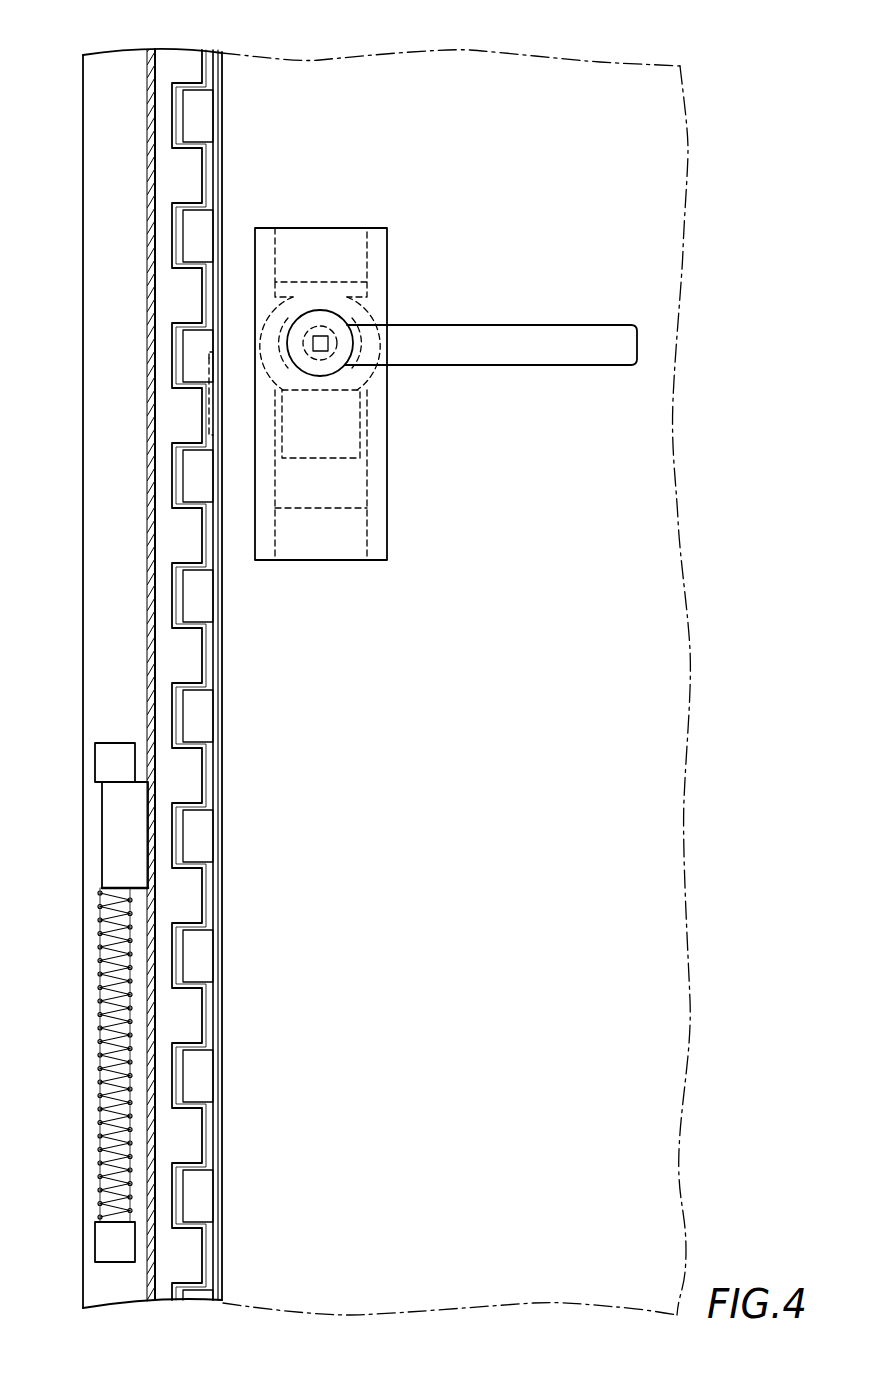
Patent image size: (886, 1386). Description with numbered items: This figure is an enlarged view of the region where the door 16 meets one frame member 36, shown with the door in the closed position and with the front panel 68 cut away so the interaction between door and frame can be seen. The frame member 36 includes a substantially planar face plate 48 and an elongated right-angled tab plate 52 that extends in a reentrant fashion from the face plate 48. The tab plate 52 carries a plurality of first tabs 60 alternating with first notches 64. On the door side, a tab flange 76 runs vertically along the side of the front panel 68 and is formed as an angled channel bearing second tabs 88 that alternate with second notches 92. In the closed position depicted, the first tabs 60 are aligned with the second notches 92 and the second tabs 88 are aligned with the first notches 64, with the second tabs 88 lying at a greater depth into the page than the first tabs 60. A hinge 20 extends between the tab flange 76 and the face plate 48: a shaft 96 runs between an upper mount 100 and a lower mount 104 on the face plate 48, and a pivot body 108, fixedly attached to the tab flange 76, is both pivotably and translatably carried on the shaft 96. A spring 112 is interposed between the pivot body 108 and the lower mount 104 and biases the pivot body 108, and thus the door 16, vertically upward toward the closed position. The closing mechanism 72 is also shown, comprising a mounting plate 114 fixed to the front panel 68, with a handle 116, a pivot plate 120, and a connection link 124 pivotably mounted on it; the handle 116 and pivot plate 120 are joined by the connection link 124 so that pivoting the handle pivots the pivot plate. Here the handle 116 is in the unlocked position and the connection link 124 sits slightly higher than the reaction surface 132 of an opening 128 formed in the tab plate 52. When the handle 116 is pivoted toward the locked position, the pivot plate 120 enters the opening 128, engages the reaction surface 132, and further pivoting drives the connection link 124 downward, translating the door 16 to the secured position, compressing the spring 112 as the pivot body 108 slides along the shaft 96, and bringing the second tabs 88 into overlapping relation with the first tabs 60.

The door 16 is at (128, 97).
The hinge 20 is at (80, 820).
The frame member 36 is at (70, 408).
The face plate 48 is at (117, 65).
The tab plate 52 is at (230, 66).
The first tab 60 is at (183, 115).
The first notch 64 is at (210, 183).
The front panel 68 is at (687, 118).
The closing mechanism 72 is at (340, 207).
The tab flange 76 is at (135, 238).
The second tab 88 is at (217, 163).
The second notch 92 is at (173, 223).
The shaft 96 is at (100, 1048).
The upper mount 100 is at (97, 755).
The lower mount 104 is at (95, 1240).
The pivot body 108 is at (100, 850).
The spring 112 is at (100, 948).
The mounting plate 114 is at (387, 273).
The handle 116 is at (523, 323).
The pivot plate 120 is at (335, 458).
The connection link 124 is at (325, 352).
The opening 128 is at (213, 425).
The reaction surface 132 is at (215, 357).